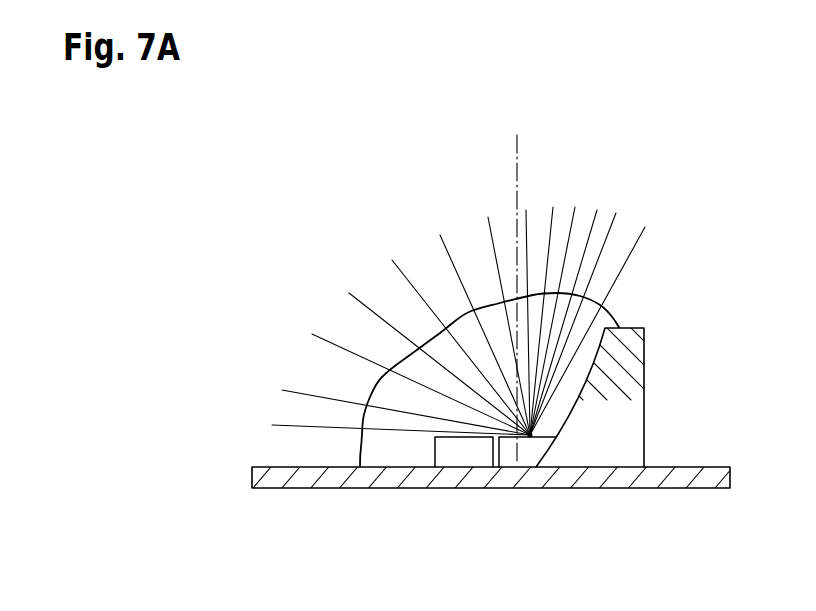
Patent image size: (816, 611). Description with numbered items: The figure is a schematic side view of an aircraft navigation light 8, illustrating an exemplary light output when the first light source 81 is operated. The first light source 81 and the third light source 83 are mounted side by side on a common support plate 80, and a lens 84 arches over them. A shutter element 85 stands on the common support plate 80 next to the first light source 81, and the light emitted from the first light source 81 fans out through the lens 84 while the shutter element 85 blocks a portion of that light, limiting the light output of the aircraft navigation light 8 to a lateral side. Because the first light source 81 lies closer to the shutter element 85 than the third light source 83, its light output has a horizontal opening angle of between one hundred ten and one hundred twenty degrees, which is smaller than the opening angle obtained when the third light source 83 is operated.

The aircraft navigation light 8 is at (620, 125).
The common support plate 80 is at (270, 477).
The first light source 81 is at (523, 457).
The third light source 83 is at (460, 457).
The lens 84 is at (587, 311).
The shutter element 85 is at (610, 450).